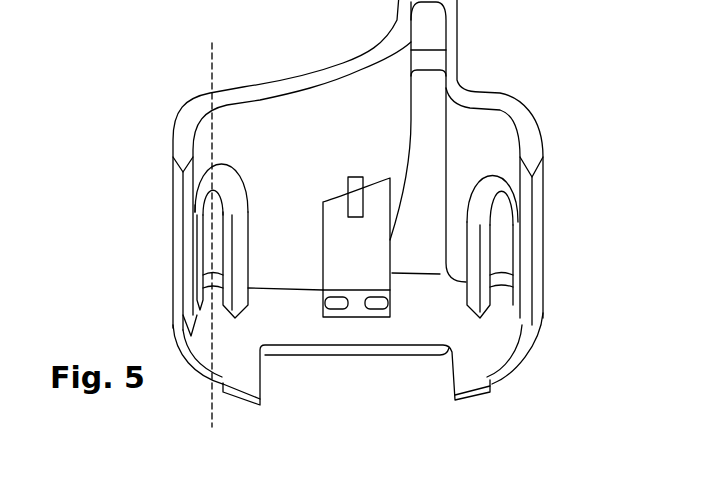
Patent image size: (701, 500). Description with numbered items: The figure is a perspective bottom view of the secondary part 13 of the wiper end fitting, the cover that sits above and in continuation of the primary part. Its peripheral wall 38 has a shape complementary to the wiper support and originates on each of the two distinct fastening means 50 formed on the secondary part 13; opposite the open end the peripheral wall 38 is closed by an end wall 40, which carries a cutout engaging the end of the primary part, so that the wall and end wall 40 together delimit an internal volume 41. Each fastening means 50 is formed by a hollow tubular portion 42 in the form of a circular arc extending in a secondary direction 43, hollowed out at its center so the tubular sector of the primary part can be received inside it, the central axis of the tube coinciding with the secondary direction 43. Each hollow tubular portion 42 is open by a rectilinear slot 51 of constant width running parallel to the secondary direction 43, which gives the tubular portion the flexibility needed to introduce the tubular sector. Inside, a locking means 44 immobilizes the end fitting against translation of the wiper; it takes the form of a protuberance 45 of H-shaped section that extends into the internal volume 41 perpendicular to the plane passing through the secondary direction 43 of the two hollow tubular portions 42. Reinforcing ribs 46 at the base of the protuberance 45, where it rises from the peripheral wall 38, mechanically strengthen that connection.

The secondary part 13 is at (315, 215).
The peripheral wall 38 is at (365, 65).
The end wall 40 is at (423, 327).
The internal volume 41 is at (303, 140).
The hollow tubular portion 42 is at (200, 176).
The secondary direction 43 is at (208, 400).
The locking means 44 is at (400, 198).
The protuberance 45 is at (333, 268).
The reinforcing ribs 46 is at (358, 185).
The fastening means 50 is at (230, 152).
The slot 51 is at (202, 315).